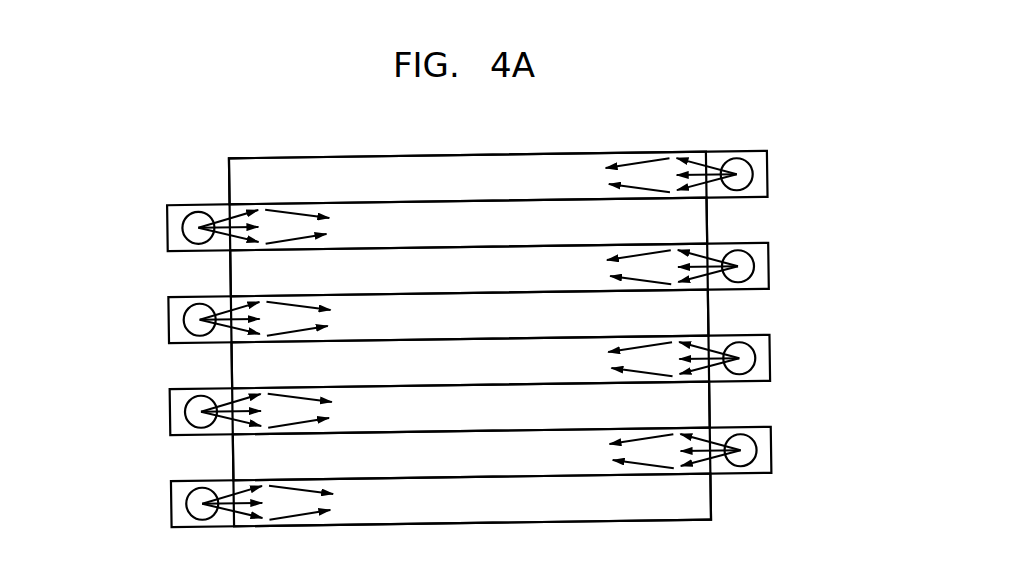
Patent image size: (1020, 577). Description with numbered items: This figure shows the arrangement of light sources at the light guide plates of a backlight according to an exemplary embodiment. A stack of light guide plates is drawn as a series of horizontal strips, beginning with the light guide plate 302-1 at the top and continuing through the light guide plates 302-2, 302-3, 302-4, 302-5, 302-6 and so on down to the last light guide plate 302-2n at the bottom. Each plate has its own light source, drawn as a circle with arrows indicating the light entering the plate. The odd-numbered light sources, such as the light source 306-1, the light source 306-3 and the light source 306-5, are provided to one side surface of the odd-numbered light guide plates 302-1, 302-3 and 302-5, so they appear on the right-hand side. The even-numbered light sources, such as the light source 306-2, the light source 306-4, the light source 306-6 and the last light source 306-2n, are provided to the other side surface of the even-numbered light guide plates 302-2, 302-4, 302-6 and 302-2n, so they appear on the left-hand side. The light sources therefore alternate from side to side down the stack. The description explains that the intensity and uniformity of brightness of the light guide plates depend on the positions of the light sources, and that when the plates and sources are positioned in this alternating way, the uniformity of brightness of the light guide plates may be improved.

The light guide plate 302-1 is at (243, 179).
The light guide plate 302-2 is at (695, 225).
The light guide plate 302-3 is at (243, 271).
The light guide plate 302-4 is at (695, 317).
The light guide plate 302-5 is at (243, 363).
The light guide plate 302-6 is at (695, 409).
The light guide plate 302-2n is at (695, 501).
The light source 306-1 is at (755, 178).
The light source 306-2 is at (200, 224).
The light source 306-3 is at (755, 270).
The light source 306-4 is at (200, 316).
The light source 306-5 is at (755, 362).
The light source 306-6 is at (200, 408).
The light source 306-2n is at (200, 500).